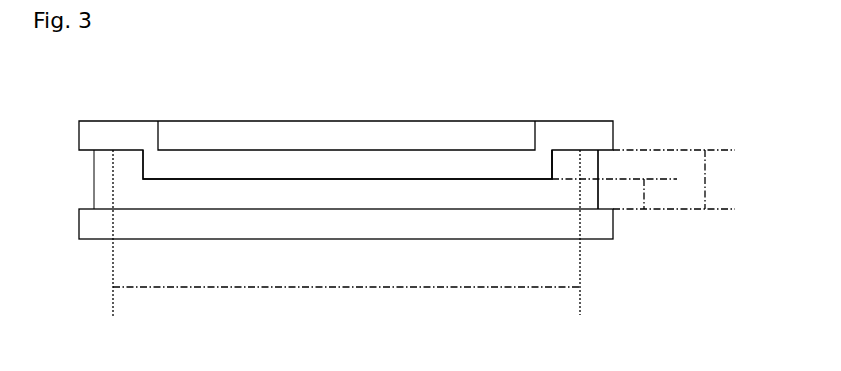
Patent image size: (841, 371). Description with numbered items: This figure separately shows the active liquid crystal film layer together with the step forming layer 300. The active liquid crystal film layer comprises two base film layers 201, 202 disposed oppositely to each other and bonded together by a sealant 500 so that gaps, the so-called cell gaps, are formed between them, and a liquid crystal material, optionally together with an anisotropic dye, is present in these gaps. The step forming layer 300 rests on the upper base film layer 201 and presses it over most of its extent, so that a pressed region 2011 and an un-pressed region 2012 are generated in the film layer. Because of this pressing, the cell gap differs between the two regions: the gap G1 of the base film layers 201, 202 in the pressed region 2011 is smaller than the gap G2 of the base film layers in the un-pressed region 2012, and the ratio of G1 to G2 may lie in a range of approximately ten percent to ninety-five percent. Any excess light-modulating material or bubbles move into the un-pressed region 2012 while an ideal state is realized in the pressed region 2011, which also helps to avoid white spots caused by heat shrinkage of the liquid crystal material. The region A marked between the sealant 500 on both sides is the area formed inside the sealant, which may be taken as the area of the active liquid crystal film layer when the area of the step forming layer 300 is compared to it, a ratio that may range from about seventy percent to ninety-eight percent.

The base film layer 201 is at (346, 150).
The base film layer 202 is at (346, 224).
The step forming layer 300 is at (346, 135).
The sealant 500 is at (104, 181).
The pressed region 2011 is at (267, 189).
The un-pressed region 2012 is at (569, 188).
The region formed inside the sealant A is at (346, 233).
The gap of the base film layers in the pressed region G1 is at (614, 194).
The gap of the base film layers in the un-pressed region G2 is at (674, 179).